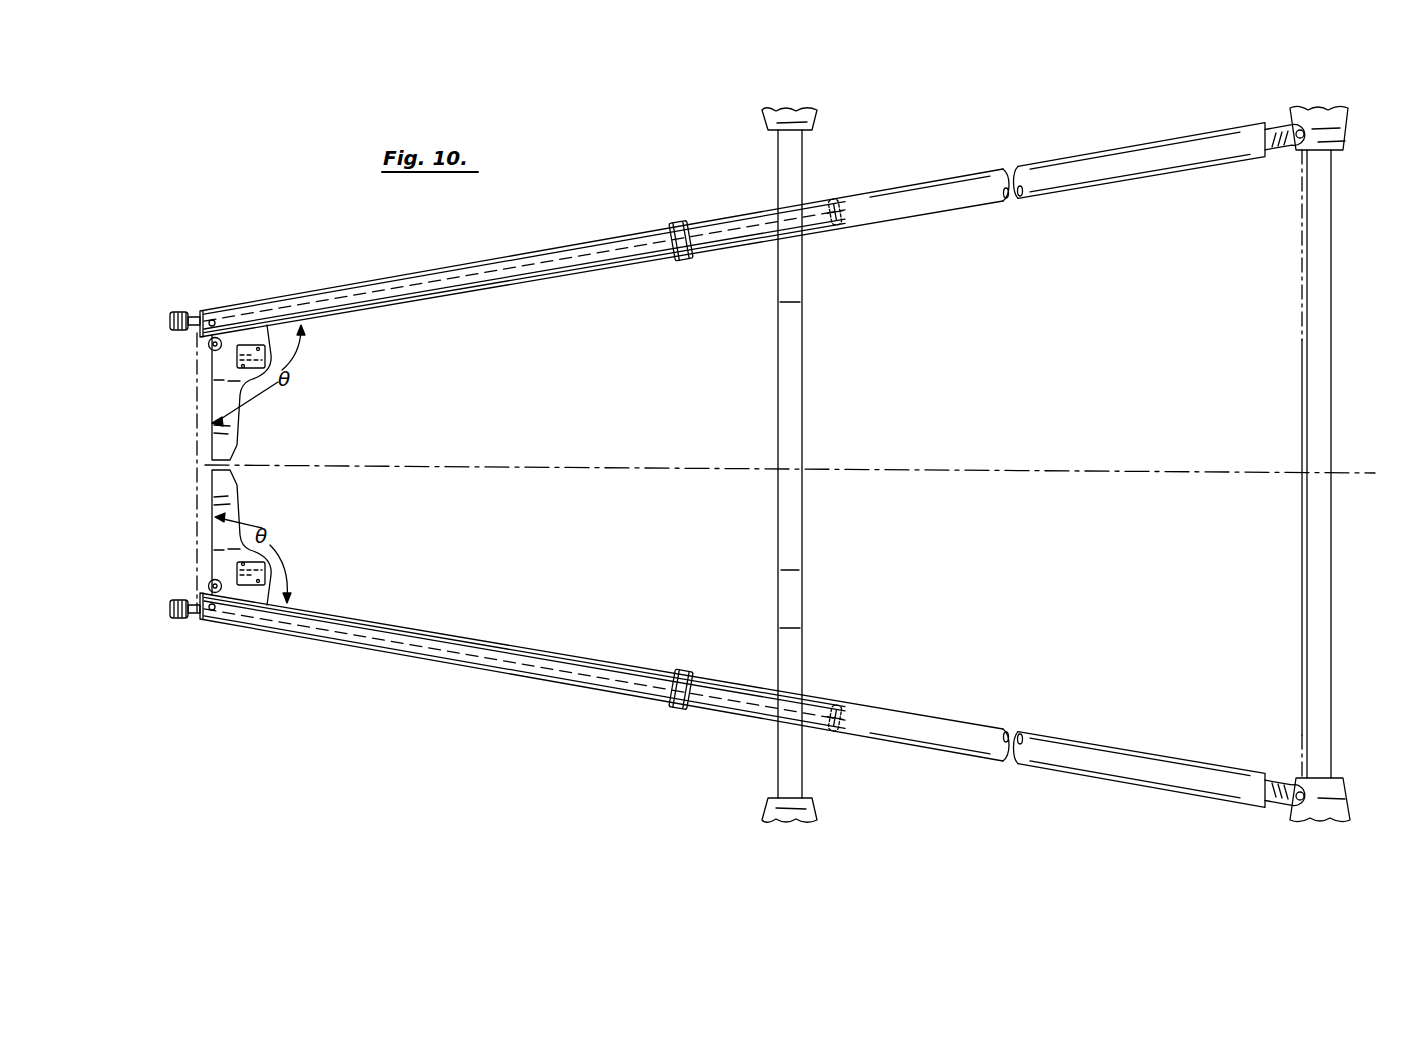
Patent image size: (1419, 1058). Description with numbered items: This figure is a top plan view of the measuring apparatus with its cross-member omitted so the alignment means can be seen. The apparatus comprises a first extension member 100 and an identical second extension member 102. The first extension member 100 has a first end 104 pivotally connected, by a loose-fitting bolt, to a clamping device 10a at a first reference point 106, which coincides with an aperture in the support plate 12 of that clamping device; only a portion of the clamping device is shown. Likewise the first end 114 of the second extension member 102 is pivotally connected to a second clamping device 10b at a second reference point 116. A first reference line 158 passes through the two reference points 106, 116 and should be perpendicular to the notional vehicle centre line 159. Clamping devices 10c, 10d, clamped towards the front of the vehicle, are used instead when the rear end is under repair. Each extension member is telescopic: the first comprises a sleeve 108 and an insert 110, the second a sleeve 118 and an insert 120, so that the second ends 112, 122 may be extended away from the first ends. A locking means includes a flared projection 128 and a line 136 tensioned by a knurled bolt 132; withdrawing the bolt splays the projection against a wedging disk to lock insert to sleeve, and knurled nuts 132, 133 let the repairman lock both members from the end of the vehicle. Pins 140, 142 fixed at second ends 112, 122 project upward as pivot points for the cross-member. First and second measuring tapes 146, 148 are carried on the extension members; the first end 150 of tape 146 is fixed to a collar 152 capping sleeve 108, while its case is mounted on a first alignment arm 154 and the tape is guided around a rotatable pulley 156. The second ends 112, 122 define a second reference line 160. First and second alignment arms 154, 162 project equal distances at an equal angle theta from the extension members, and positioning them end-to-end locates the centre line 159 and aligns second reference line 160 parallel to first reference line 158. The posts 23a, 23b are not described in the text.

The clamping device 10a is at (1349, 121).
The clamping device 10b is at (1350, 805).
The clamping device 10c is at (768, 800).
The clamping device 10d is at (768, 120).
The support plate 12 is at (1340, 143).
The right vertical post 23a is at (1326, 400).
The center vertical post 23b is at (793, 392).
The first extension member 100 is at (916, 166).
The second extension member 102 is at (877, 756).
The first end 104 is at (1268, 128).
The first reference point 106 is at (1298, 143).
The sleeve portion 108 is at (1068, 159).
The insert portion 110 is at (449, 272).
The second end 112 is at (198, 317).
The first end 114 is at (1280, 799).
The second reference point 116 is at (1299, 787).
The sleeve 118 is at (1065, 772).
The insert 120 is at (415, 658).
The second end 122 is at (199, 625).
The flared projection 128 is at (847, 183).
The knurled bolt 132 is at (178, 312).
The knurled nut 133 is at (175, 616).
The line 136 is at (563, 258).
The pin 140 is at (199, 330).
The pin 142 is at (207, 597).
The first measuring tape 146 is at (492, 290).
The second measuring tape 148 is at (562, 648).
The first end 150 is at (672, 260).
The collar 152 is at (680, 221).
The first alignment arm 154 is at (230, 406).
The rotatable pulley 156 is at (210, 349).
The first reference line 158 is at (1302, 380).
The vehicle centre line 159 is at (607, 468).
The second reference line 160 is at (195, 455).
The second alignment arm 162 is at (228, 493).